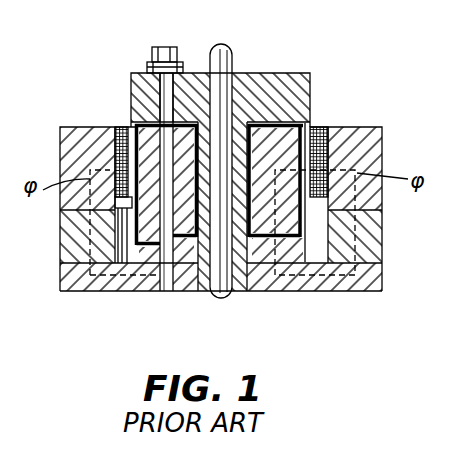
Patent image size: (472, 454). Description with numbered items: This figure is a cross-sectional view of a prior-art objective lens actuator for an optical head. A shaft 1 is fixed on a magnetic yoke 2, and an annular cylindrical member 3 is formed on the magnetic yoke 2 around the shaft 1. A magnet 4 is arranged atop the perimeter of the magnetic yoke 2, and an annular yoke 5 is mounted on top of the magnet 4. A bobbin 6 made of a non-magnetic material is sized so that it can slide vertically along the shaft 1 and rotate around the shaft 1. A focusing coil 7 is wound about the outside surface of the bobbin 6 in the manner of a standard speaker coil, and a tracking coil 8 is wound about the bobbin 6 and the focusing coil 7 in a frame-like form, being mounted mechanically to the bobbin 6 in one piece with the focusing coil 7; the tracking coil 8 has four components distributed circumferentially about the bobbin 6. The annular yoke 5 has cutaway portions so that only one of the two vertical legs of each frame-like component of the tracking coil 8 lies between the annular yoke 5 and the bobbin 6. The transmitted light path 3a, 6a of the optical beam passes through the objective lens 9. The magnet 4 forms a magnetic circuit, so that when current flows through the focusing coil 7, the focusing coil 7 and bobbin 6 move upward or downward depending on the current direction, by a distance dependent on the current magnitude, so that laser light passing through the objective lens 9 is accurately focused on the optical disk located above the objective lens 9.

The shaft 1 is at (226, 46).
The magnetic yoke 2 is at (288, 291).
The annular cylindrical member 3 is at (270, 132).
The transmitted light path 3a is at (143, 288).
The magnet 4 is at (383, 227).
The annular yoke 5 is at (367, 142).
The bobbin 6 is at (130, 82).
The transmitted light path 6a is at (160, 100).
The focusing coil 7 is at (315, 127).
The tracking coil 8 is at (112, 149).
The objective lens 9 is at (164, 47).